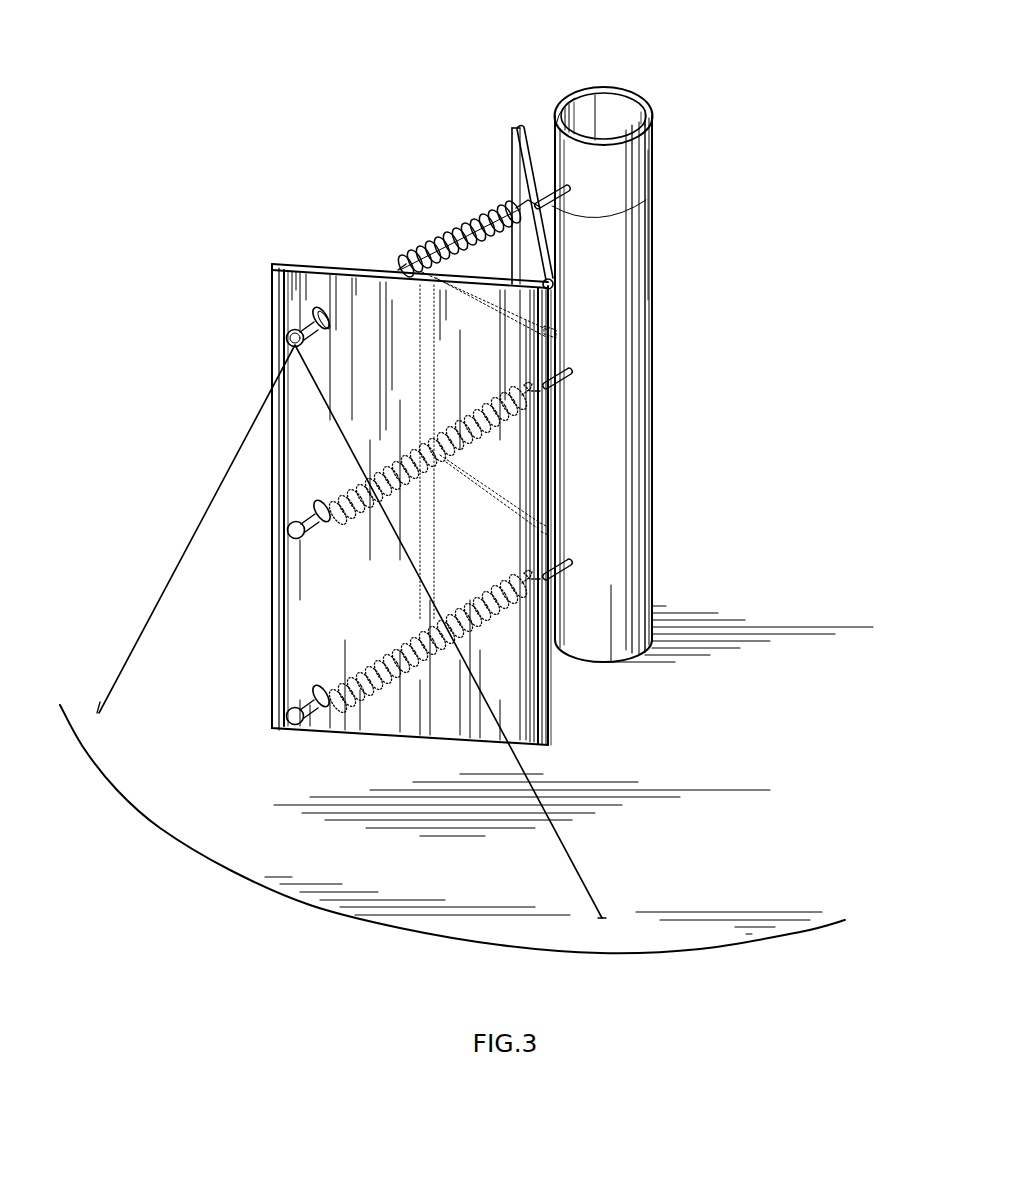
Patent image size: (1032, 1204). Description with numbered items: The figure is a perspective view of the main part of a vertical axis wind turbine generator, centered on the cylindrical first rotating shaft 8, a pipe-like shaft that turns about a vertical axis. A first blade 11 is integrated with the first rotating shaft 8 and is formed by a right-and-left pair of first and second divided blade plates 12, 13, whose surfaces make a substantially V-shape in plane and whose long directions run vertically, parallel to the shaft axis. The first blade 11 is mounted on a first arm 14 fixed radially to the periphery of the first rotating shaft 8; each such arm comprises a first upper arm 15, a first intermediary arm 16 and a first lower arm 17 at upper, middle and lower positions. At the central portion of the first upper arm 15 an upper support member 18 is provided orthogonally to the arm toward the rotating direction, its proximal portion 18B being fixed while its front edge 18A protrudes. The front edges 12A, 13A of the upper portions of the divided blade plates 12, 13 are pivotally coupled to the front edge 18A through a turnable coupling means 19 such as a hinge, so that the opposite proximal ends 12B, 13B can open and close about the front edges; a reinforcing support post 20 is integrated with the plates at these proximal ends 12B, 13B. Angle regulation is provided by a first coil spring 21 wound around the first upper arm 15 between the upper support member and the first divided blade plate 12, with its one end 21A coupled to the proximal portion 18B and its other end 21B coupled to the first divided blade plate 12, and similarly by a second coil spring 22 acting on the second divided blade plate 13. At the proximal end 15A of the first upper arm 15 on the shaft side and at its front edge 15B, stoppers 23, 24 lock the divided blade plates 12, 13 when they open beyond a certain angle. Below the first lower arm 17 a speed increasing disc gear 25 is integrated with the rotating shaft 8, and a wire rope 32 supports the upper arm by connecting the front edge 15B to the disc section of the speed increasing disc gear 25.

The first rotating shaft 8 is at (650, 147).
The first blade 11 is at (577, 329).
The first divided blade plate 12 is at (553, 227).
The front edge of first divided blade plate 12A is at (550, 273).
The proximal end of first divided blade plate 12B is at (510, 147).
The second divided blade plate 13 is at (440, 292).
The front edge of second divided blade plate 13A is at (548, 332).
The proximal end of second divided blade plate 13B is at (293, 267).
The first arm 14 is at (660, 200).
The first upper arm 15 is at (660, 200).
The proximal end of first upper arm 15A is at (560, 170).
The front edge of first upper arm 15B is at (290, 338).
The first intermediary arm 16 is at (352, 506).
The first lower arm 17 is at (298, 710).
The upper support member 18 is at (473, 300).
The front edge of upper support member 18A is at (548, 332).
The proximal portion of upper support member 18B is at (400, 270).
The turnable coupling means 19 is at (548, 412).
The reinforcing support post 20 is at (556, 524).
The first coil spring 21 is at (437, 248).
The one end of first coil spring 21A is at (403, 262).
The other end of first coil spring 21B is at (512, 210).
The second coil spring 22 is at (380, 302).
The stopper 23 is at (538, 165).
The stopper 24 is at (315, 314).
The speed increasing disc gear 25 is at (657, 953).
The wire rope 32 is at (568, 845).